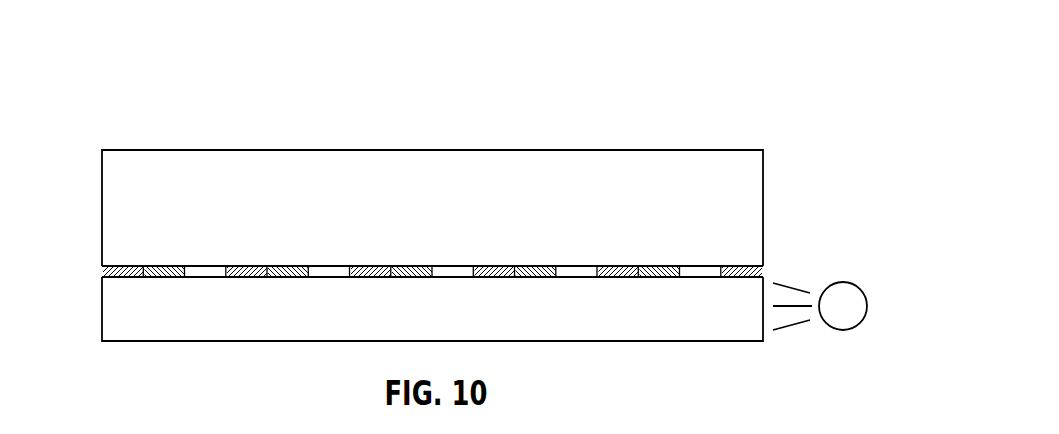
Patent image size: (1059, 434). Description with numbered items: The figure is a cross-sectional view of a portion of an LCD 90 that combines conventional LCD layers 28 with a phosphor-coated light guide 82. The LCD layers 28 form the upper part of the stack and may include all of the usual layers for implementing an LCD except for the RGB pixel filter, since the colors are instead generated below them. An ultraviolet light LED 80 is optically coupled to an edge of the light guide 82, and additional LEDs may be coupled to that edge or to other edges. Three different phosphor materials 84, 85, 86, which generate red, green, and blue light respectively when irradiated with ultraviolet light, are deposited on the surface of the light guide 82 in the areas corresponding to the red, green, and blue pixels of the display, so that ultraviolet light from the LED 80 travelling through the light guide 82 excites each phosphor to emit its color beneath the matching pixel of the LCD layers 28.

The LCD 90 is at (680, 86).
The LCD layers 28 is at (718, 157).
The light guide 82 is at (652, 330).
The phosphor material 84 is at (112, 280).
The phosphor material 85 is at (163, 278).
The phosphor material 86 is at (207, 272).
The ultraviolet light LED 80 is at (842, 330).